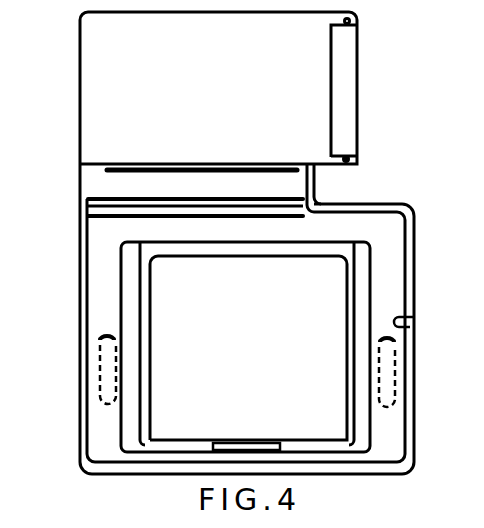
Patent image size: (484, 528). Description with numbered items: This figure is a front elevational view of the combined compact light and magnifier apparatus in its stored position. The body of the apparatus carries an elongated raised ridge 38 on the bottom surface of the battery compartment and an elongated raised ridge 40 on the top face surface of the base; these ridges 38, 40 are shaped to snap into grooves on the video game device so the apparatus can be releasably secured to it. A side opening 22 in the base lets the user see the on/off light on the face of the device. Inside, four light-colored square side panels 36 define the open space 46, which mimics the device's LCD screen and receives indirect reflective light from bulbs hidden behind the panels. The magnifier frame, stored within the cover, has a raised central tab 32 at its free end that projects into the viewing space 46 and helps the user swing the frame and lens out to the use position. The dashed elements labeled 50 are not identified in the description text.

The side opening 22 is at (408, 322).
The raised central tab 32 is at (276, 443).
The side panels 36 is at (340, 323).
The elongated raised ridge 38 is at (331, 188).
The elongated raised ridge 40 is at (93, 199).
The open space 46 is at (306, 391).
The clip 50 is at (105, 363).